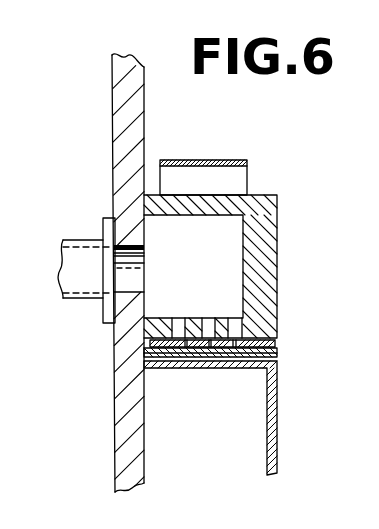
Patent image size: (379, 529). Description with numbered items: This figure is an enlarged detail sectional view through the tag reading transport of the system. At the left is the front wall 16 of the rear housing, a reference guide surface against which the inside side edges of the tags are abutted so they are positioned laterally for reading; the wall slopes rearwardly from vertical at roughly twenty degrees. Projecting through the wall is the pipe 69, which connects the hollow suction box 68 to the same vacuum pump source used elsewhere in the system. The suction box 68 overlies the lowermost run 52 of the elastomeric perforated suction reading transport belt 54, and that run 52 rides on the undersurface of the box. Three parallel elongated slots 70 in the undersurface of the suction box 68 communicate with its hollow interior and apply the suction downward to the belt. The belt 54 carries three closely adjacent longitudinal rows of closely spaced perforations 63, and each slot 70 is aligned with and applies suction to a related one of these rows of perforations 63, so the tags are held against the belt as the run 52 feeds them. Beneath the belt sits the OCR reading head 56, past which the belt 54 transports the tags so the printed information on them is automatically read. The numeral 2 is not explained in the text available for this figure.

The front wall 16 is at (118, 79).
The pipe 69 is at (83, 240).
The suction reading transport belt 54 is at (218, 160).
The hollow suction box 68 is at (278, 220).
The elongated slots 70 is at (237, 319).
The lowermost run 52 is at (248, 338).
The perforations 63 is at (183, 350).
The plate 2 is at (277, 350).
The OCR reading head 56 is at (277, 420).